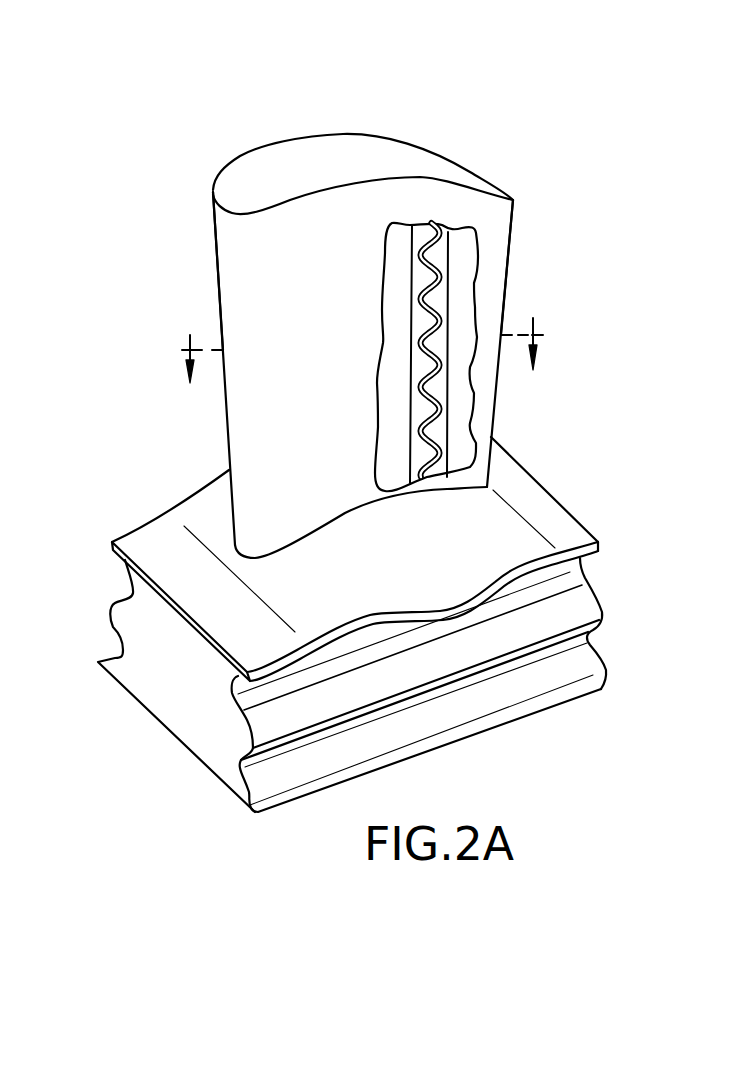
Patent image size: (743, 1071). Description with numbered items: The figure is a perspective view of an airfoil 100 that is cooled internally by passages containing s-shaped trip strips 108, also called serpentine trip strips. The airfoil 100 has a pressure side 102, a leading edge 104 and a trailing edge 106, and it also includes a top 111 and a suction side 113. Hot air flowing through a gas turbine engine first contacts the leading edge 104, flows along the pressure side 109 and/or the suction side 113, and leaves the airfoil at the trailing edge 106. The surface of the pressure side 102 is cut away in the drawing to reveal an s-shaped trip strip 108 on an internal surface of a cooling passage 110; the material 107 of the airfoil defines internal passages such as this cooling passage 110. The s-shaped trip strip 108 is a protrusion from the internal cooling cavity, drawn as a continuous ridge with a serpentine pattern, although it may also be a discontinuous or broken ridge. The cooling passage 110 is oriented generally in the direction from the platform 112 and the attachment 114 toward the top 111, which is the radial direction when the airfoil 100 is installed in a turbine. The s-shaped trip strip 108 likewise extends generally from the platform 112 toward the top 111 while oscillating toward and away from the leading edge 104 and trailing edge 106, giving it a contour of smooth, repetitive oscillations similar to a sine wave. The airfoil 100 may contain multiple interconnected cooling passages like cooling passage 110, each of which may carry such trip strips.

The airfoil 100 is at (558, 163).
The pressure side 102 is at (273, 280).
The leading edge 104 is at (221, 328).
The trailing edge 106 is at (508, 312).
The material 107 is at (470, 397).
The s-shaped trip strip 108 is at (437, 265).
The pressure side 109 is at (353, 230).
The cooling passage 110 is at (447, 230).
The top 111 is at (293, 155).
The platform 112 is at (547, 527).
The suction side 113 is at (352, 133).
The attachment 114 is at (580, 660).